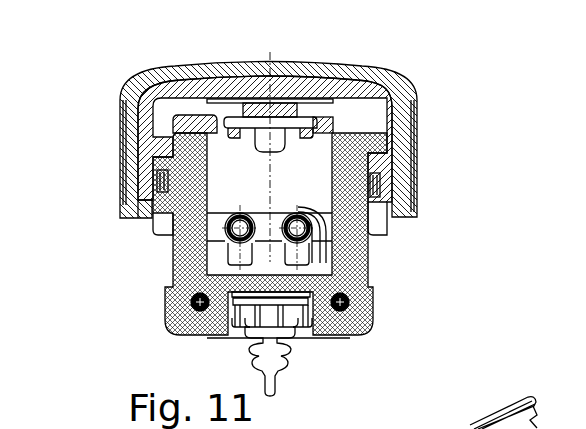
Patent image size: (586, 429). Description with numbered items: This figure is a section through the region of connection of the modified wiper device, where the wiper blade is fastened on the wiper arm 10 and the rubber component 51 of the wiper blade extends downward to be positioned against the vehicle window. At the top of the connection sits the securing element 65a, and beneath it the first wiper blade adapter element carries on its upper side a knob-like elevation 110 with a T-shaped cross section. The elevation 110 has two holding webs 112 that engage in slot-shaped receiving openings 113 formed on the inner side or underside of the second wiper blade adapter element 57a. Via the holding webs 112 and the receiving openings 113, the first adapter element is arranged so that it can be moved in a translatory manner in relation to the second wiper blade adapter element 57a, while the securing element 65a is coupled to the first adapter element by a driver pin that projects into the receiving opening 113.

The securing element 65a is at (236, 68).
The holding webs 112 is at (233, 117).
The knob-like elevation 110 is at (287, 127).
The receiving openings 113 is at (232, 108).
The second wiper blade adapter element 57a is at (376, 139).
The rubber component 51 is at (266, 385).
The wiper arm 10 is at (453, 413).